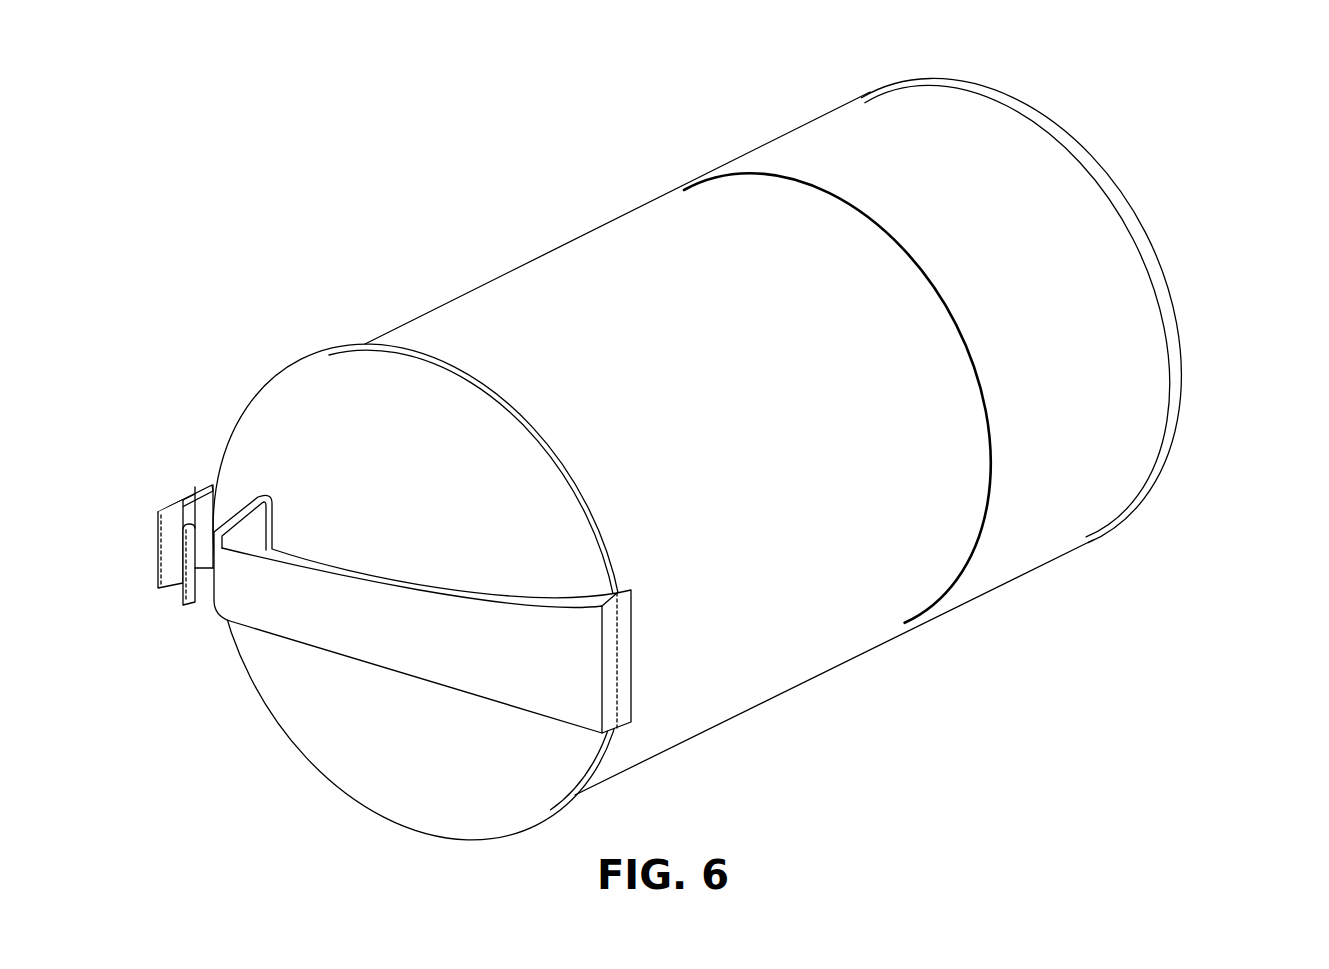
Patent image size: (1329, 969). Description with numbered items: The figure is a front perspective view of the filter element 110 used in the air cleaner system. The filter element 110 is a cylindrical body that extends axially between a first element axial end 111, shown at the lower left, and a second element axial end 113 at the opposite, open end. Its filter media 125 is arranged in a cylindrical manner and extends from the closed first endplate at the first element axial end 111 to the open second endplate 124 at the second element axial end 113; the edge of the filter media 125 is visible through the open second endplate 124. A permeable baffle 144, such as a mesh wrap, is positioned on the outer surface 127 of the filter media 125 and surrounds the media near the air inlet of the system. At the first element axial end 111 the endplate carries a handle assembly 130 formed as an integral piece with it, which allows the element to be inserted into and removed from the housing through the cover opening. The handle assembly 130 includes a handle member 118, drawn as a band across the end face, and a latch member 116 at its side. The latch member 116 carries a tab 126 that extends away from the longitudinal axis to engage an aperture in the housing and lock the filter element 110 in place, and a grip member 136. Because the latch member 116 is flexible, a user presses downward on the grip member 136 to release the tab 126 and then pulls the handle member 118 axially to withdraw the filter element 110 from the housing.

The filter element 110 is at (684, 469).
The first element axial end 111 is at (308, 800).
The second element axial end 113 is at (1045, 295).
The latch member 116 is at (172, 582).
The handle member 118 is at (483, 668).
The second endplate 124 is at (1128, 187).
The filter media 125 is at (632, 243).
The tab 126 is at (140, 579).
The outer surface of the filter media 127 is at (505, 282).
The handle assembly 130 is at (349, 636).
The grip member 136 is at (156, 520).
The permeable baffle 144 is at (833, 130).